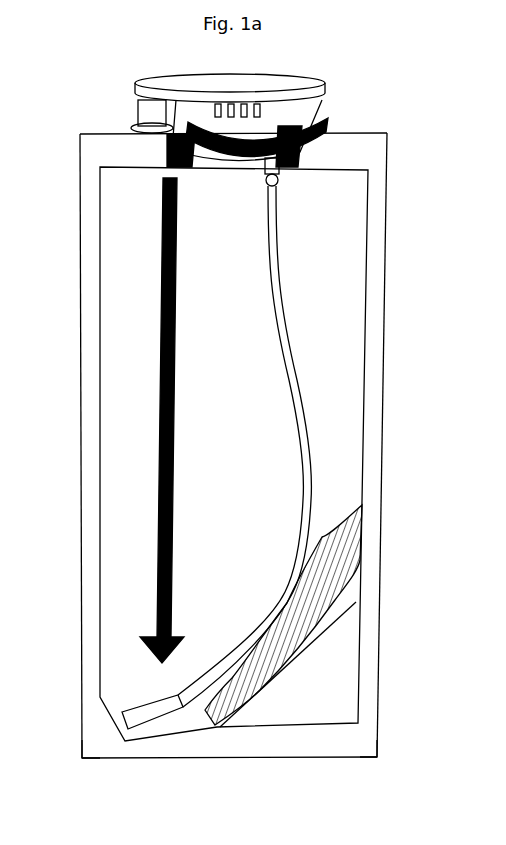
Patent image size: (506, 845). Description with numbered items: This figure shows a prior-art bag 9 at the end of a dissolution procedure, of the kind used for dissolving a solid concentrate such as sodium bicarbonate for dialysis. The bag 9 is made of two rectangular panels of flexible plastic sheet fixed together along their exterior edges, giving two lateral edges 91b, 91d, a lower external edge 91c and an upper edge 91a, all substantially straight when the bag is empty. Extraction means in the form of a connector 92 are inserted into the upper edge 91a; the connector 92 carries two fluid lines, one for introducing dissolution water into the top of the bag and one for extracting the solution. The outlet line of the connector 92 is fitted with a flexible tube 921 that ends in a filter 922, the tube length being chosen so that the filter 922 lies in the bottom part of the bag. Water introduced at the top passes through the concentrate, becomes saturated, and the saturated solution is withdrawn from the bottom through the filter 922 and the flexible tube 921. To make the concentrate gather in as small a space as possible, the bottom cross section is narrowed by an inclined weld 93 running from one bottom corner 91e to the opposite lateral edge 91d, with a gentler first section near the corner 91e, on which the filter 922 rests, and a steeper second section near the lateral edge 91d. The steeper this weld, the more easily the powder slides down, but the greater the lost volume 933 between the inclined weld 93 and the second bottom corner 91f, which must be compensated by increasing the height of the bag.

The bag of the prior art 9 is at (92, 100).
The upper edge 91a is at (339, 152).
The lateral edge 91b is at (89, 378).
The lower external edge 91c is at (145, 748).
The lateral edge 91d is at (373, 278).
The corner of the bottom part of the bag 91e is at (93, 745).
The second corner of the bottom part of the bag 91f is at (363, 742).
The connector 92 is at (252, 78).
The flexible tube 921 is at (268, 300).
The filter 922 is at (138, 705).
The inclined weld 93 is at (293, 657).
The lost volume of bag 933 is at (282, 705).